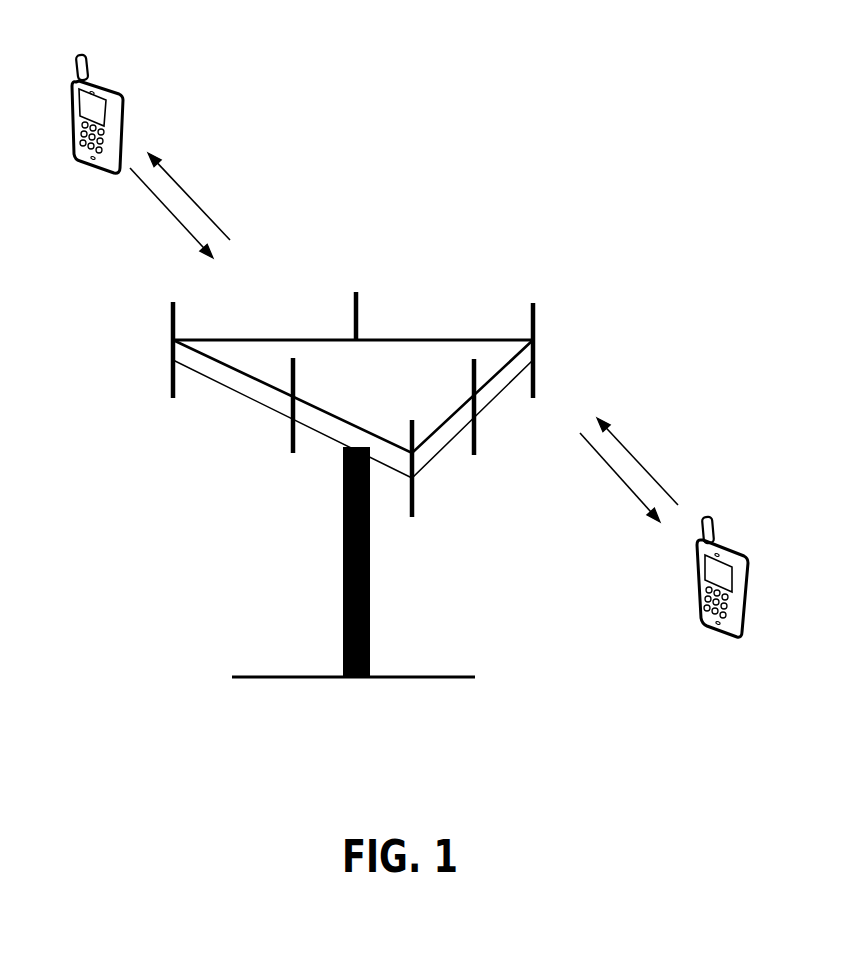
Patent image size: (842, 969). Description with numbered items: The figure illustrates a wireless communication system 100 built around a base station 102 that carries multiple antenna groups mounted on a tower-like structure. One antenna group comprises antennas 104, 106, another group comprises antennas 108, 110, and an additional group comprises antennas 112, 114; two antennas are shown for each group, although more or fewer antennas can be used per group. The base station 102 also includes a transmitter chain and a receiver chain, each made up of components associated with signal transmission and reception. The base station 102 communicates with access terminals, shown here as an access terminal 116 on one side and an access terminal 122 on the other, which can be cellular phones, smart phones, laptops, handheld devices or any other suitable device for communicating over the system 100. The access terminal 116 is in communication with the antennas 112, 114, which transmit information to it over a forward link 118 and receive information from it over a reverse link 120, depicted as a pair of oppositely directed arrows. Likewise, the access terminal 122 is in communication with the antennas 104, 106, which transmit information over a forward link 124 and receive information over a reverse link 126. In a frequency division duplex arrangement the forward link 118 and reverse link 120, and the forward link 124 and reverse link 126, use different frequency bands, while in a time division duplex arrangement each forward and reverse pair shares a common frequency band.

The wireless communication system 100 is at (502, 118).
The base station 102 is at (368, 680).
The antenna 104 is at (533, 303).
The antenna 106 is at (474, 437).
The antenna 108 is at (412, 492).
The antenna 110 is at (293, 453).
The antenna 112 is at (173, 302).
The antenna 114 is at (356, 293).
The access terminal 116 is at (97, 75).
The forward link 118 is at (192, 197).
The reverse link 120 is at (183, 228).
The access terminal 122 is at (718, 538).
The forward link 124 is at (623, 488).
The reverse link 126 is at (632, 452).